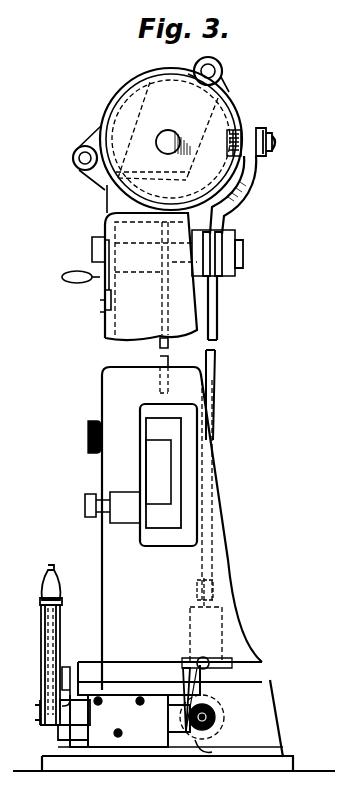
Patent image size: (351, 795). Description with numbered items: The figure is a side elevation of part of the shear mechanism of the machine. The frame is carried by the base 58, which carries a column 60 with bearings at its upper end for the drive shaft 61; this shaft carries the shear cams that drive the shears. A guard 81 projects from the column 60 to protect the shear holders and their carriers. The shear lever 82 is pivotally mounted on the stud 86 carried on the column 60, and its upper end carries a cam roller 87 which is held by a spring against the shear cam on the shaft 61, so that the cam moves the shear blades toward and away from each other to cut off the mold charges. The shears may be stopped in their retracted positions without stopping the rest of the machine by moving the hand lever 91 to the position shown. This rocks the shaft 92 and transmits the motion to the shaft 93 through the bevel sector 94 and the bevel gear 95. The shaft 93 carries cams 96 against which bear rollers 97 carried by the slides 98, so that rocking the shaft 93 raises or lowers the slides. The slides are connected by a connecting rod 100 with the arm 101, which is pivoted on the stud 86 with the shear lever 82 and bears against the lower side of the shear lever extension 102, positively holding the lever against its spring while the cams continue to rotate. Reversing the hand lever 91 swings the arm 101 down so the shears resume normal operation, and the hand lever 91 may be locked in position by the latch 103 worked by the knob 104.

The drive shaft 61 is at (180, 121).
The cam roller 87 is at (243, 128).
The lever 82 is at (257, 170).
The stud 86 is at (95, 250).
The shear lever extension 102 is at (226, 238).
The arm 101 is at (240, 281).
The connecting rod 100 is at (219, 378).
The column 60 is at (222, 572).
The guard 81 is at (152, 445).
The slide 98 is at (220, 620).
The roller 97 is at (210, 659).
The shaft 92 is at (103, 710).
The hand lever 91 is at (43, 624).
The knob 104 is at (58, 563).
The latch 103 is at (72, 666).
The bevel sector 94 is at (200, 703).
The shaft 93 is at (218, 716).
The cam 96 is at (224, 730).
The bevel gear 95 is at (208, 745).
The base 58 is at (270, 735).